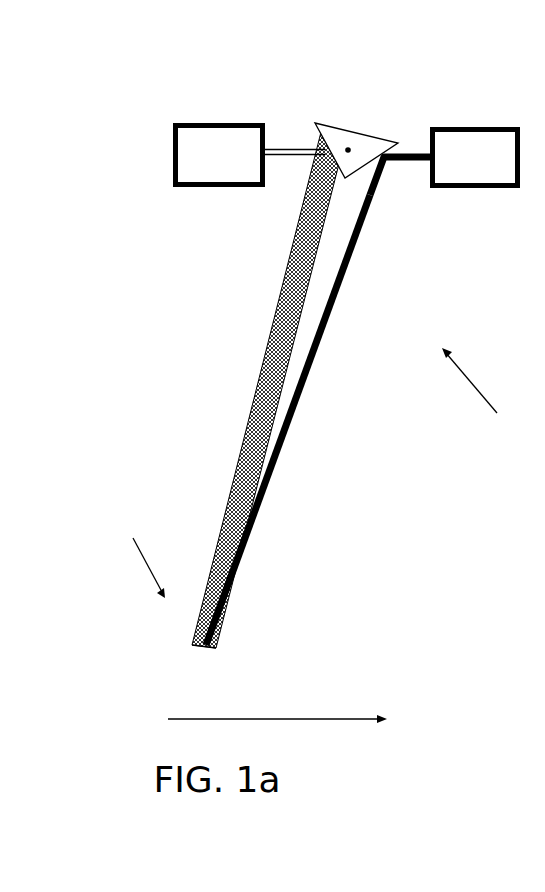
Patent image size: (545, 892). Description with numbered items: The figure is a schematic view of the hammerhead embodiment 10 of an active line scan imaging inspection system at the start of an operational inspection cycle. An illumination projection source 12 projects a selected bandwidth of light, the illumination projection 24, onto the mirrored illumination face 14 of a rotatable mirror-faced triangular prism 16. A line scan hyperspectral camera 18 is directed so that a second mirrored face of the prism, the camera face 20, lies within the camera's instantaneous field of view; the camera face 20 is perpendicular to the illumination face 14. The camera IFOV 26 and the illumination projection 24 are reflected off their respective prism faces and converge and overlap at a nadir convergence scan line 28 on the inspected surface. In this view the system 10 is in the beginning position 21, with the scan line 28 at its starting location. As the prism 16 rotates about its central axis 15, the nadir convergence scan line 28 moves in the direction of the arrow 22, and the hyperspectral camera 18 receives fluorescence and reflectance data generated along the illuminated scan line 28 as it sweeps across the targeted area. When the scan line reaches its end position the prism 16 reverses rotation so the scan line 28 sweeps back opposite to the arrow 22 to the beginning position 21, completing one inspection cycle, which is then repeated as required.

The hammerhead embodiment 10 is at (475, 394).
The illumination projection source 12 is at (219, 155).
The illumination face 14 is at (323, 140).
The central axis 15 is at (347, 146).
The rotatable mirror-faced triangular prism 16 is at (353, 135).
The line scan hyperspectral camera 18 is at (475, 158).
The camera face 20 is at (377, 173).
The beginning position 21 is at (144, 558).
The arrow 22 is at (256, 719).
The illumination projection 24 is at (285, 292).
The camera IFOV 26 is at (317, 342).
The nadir convergence scan line 28 is at (218, 632).